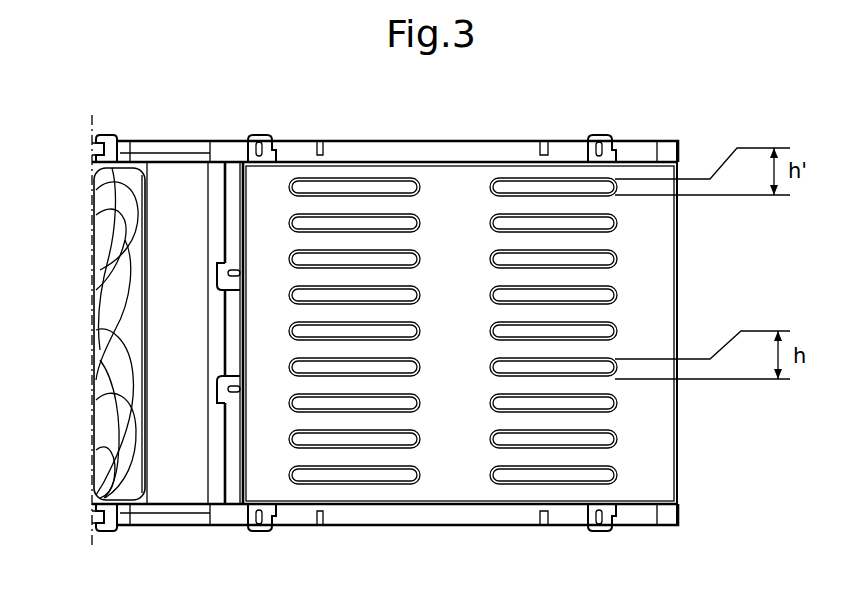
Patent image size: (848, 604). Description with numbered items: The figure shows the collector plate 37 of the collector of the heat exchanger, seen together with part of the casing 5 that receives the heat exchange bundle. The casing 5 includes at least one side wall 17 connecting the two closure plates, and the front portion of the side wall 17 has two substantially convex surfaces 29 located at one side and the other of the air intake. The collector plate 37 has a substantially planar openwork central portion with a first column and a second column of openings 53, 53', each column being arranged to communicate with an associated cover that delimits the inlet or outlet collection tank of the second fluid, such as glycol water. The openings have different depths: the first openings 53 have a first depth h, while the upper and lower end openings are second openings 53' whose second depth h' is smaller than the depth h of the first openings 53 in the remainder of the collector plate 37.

The casing 5 is at (110, 102).
The side wall 17 is at (164, 128).
The substantially convex surfaces 29 is at (92, 357).
The collector plate 37 is at (619, 98).
The first openings 53 is at (511, 331).
The second openings 53' is at (453, 330).